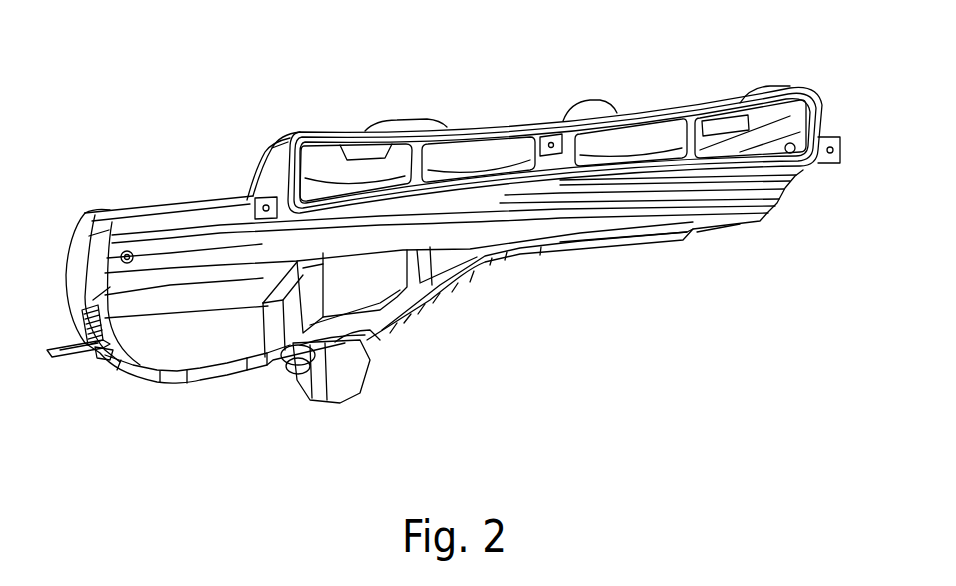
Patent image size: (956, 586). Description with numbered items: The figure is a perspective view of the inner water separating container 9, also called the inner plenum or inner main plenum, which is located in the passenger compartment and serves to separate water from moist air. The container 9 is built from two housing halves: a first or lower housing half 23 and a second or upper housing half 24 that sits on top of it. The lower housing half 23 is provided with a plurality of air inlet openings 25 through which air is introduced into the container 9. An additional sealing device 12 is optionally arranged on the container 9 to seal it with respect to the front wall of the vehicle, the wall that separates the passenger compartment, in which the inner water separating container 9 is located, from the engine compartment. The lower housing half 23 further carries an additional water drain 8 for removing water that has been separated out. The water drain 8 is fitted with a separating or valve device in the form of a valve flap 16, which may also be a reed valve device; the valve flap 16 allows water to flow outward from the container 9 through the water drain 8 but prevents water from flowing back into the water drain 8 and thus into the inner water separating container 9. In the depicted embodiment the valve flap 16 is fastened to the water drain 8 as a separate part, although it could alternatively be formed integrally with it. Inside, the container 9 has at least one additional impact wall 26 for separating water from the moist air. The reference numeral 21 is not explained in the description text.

The water drain 8 is at (355, 330).
The inner water separating container 9 is at (279, 123).
The sealing device 12 is at (767, 95).
The valve flap 16 is at (358, 396).
The bumper carrier body 21 is at (207, 174).
The lower housing half 23 is at (157, 320).
The upper housing half 24 is at (80, 215).
The air inlet openings 25 is at (455, 158).
The impact wall 26 is at (265, 178).